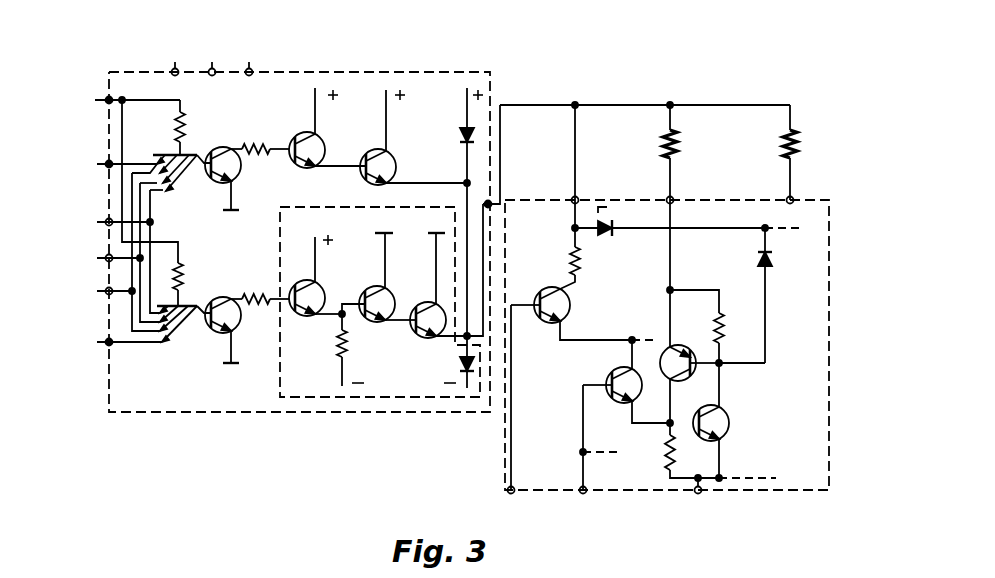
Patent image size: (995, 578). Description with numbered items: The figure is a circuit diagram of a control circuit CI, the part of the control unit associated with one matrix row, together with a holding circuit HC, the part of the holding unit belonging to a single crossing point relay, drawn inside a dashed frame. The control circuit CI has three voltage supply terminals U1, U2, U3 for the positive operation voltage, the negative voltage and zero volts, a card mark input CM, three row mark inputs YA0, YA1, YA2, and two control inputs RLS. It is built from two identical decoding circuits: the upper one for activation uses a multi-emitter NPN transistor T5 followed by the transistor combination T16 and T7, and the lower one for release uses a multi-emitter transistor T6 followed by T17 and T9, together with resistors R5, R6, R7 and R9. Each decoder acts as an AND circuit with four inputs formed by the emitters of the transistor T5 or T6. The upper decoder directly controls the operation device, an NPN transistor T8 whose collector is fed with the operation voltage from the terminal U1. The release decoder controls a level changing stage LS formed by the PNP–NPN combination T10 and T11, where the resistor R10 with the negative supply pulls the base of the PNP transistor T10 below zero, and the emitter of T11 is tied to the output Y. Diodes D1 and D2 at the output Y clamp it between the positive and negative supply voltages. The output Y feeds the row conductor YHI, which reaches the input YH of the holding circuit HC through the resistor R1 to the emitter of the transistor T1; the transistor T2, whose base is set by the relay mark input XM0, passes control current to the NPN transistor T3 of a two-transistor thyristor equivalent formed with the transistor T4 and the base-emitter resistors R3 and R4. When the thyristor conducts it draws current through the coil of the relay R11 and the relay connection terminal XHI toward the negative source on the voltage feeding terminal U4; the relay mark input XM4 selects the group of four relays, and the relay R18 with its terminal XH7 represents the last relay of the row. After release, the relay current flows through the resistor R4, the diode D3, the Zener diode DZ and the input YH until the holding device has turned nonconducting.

The control circuit CI is at (513, 39).
The holding circuit HC is at (855, 556).
The level changing stage LS is at (358, 398).
The voltage supply terminal U1 is at (172, 60).
The voltage supply terminal U2 is at (210, 60).
The voltage supply terminal U3 is at (248, 60).
The voltage feeding terminal U4 is at (697, 500).
The card mark input CM is at (122, 101).
The control input RLS is at (98, 155).
The row mark input YA0 is at (108, 223).
The row mark input YA1 is at (103, 259).
The row mark input YA2 is at (99, 292).
The multi-emitter transistor T5 is at (170, 190).
The multi-emitter transistor T6 is at (170, 340).
The transistor T16 is at (240, 177).
The transistor T17 is at (240, 326).
The resistor R5 is at (186, 128).
The resistor R6 is at (184, 272).
The resistor R7 is at (252, 141).
The resistor R9 is at (252, 291).
The resistor R10 is at (348, 340).
The transistor T7 is at (325, 140).
The transistor T8 is at (393, 157).
The transistor T9 is at (305, 280).
The transistor T10 is at (365, 286).
The transistor T11 is at (420, 301).
The diode D1 is at (459, 135).
The diode D2 is at (459, 366).
The output Y is at (493, 169).
The row conductor YHI is at (537, 104).
The input of the holding circuit YH is at (571, 198).
The relay connection terminal XHI is at (665, 198).
The relay connection terminal XH7 is at (785, 198).
The relay R11 is at (662, 146).
The relay R18 is at (784, 150).
The resistor R1 is at (568, 256).
The Zener diode DZ is at (604, 238).
The transistor T1 is at (533, 297).
The transistor T2 is at (606, 374).
The transistor T3 is at (730, 425).
The transistor T4 is at (689, 378).
The base-emitter resistor R3 is at (663, 449).
The base-emitter resistor R4 is at (725, 327).
The diode D3 is at (773, 262).
The relay mark input XM4 is at (505, 506).
The relay mark input XM0 is at (578, 506).